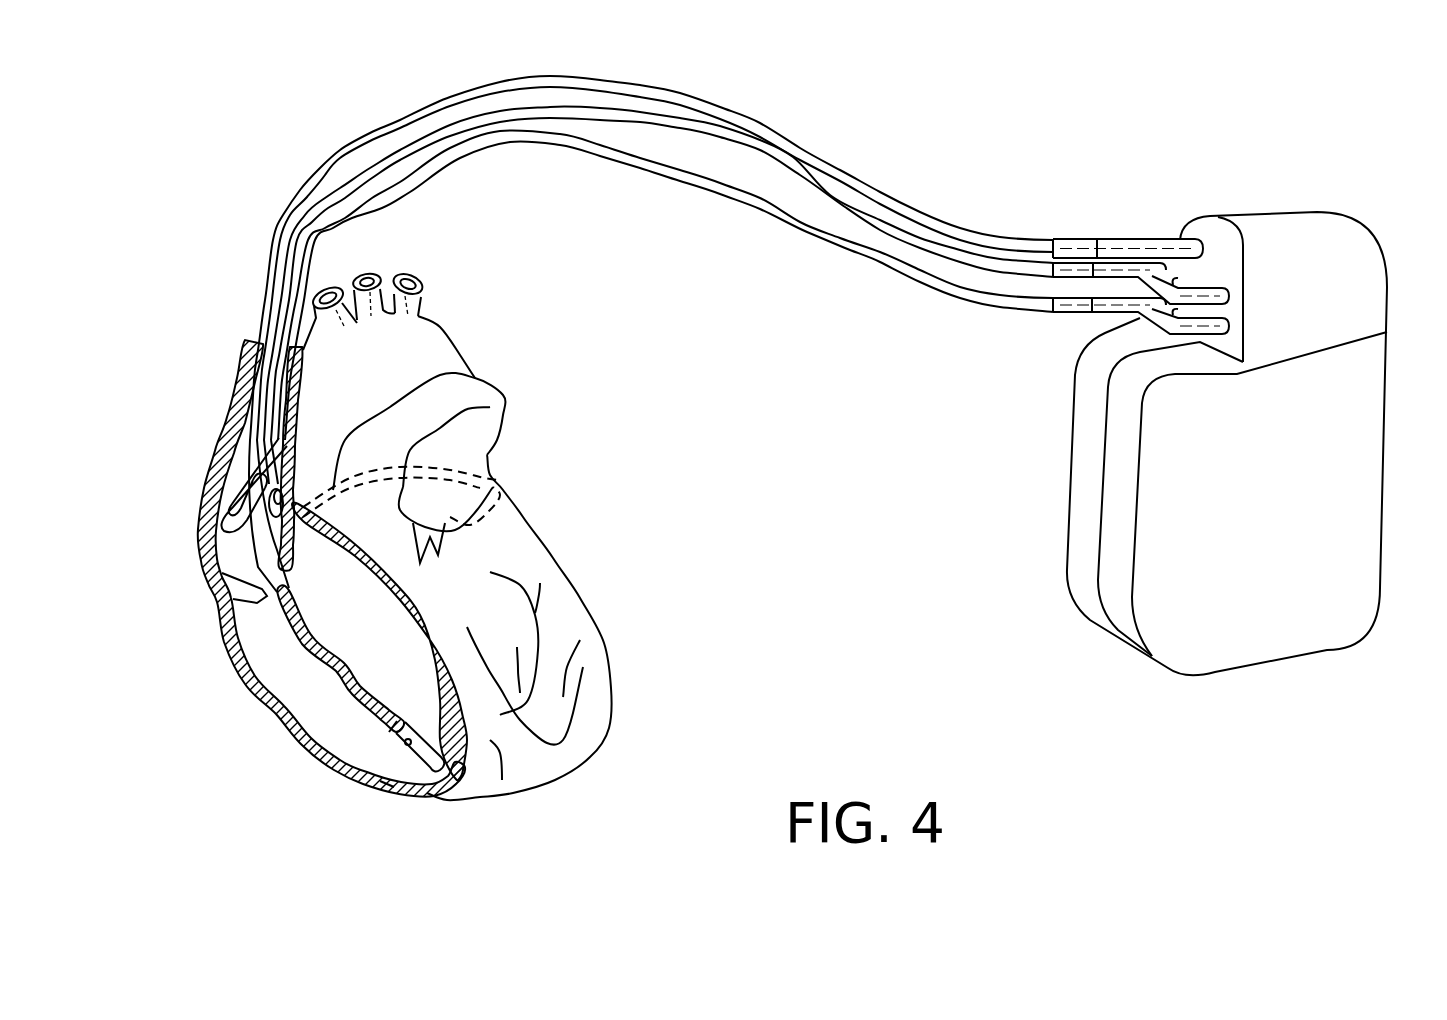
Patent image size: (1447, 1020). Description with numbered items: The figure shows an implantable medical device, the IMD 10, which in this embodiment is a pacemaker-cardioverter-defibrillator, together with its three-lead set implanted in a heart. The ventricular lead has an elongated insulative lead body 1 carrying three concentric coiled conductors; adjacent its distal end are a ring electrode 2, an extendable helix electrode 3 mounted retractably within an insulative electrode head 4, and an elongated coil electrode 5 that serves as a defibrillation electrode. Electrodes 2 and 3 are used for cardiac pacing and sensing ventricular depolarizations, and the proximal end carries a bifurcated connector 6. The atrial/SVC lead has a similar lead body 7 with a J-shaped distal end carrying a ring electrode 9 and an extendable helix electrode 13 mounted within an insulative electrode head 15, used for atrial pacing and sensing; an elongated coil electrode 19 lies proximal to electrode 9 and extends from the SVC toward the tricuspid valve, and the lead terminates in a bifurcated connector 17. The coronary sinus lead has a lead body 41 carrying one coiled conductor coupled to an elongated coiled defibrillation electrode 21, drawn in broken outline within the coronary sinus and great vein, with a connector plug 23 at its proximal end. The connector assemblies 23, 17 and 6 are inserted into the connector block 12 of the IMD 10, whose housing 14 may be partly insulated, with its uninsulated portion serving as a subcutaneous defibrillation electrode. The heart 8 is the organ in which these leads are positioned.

The lead body 1 is at (945, 283).
The ring electrode 2 is at (392, 728).
The extendable helix electrode 3 is at (437, 763).
The insulative electrode head 4 is at (387, 786).
The elongated coil electrode 5 is at (348, 649).
The bifurcated connector 6 is at (1098, 314).
The lead body 7 is at (985, 262).
The heart 8 is at (400, 577).
The ring electrode 9 is at (237, 497).
The IMD 10 is at (1255, 434).
The connector block 12 is at (1296, 233).
The extendable helix electrode 13 is at (286, 468).
The housing 14 is at (1157, 622).
The insulative electrode head 15 is at (221, 477).
The bifurcated connector 17 is at (1160, 280).
The elongated coil electrode 19 is at (250, 390).
The elongated coiled defibrillation electrode 21 is at (445, 466).
The connector plug 23 is at (1120, 246).
The lead body 41 is at (910, 216).